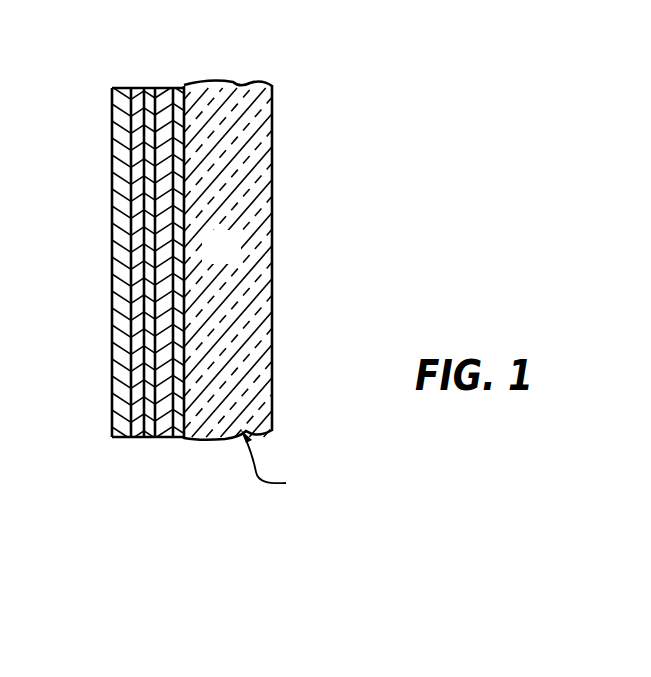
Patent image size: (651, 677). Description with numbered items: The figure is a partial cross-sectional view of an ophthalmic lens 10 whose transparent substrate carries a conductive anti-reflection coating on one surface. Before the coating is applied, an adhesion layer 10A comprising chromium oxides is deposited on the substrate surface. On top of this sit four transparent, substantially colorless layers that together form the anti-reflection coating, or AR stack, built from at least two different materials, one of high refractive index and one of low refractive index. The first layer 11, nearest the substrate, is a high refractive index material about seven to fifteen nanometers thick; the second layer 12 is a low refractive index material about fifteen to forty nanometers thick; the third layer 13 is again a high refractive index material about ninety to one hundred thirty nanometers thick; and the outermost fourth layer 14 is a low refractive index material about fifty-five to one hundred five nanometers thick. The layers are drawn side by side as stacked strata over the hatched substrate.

The ophthalmic lens 10 is at (238, 261).
The adhesion layer 10A is at (182, 86).
The first layer 11 is at (163, 88).
The second layer 12 is at (150, 88).
The third layer 13 is at (136, 88).
The fourth layer 14 is at (115, 88).